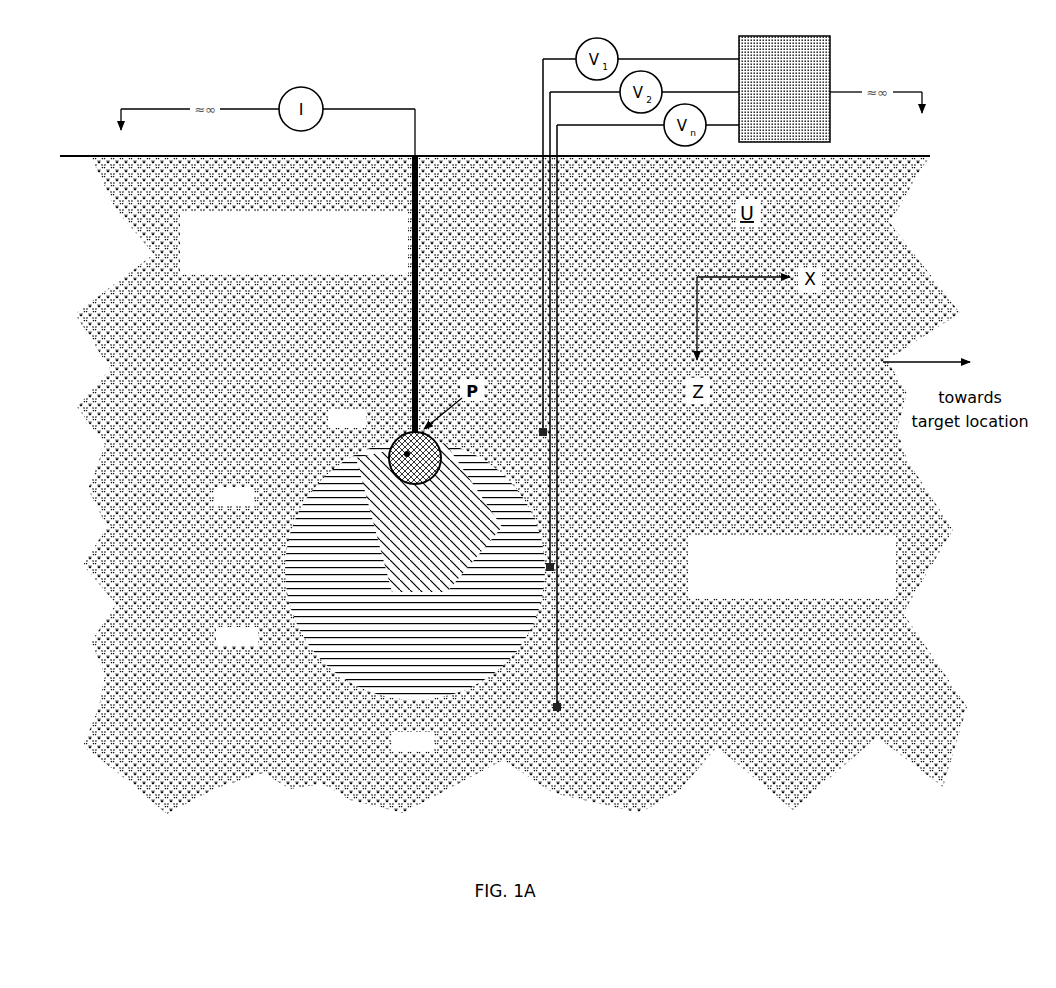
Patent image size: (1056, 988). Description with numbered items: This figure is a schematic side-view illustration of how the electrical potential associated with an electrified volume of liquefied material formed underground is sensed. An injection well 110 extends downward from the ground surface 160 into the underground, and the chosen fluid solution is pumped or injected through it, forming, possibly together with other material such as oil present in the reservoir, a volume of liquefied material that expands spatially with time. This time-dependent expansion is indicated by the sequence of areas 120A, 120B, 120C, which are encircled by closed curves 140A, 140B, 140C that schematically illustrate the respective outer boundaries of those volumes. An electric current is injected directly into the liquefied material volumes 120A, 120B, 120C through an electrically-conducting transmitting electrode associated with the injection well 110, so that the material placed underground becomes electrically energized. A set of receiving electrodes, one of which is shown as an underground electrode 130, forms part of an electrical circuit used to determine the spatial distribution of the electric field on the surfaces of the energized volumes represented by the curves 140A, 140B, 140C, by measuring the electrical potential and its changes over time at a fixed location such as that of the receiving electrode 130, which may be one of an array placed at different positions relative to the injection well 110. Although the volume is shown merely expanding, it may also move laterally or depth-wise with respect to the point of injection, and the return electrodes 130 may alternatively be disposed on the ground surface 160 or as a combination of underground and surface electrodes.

The injection well 110 is at (404, 342).
The liquefied material volume 120A is at (396, 446).
The liquefied material volume 120B is at (358, 505).
The liquefied material volume 120C is at (314, 619).
The receiving electrode 130 is at (571, 697).
The closed curve 140A is at (430, 494).
The closed curve 140B is at (444, 596).
The closed curve 140C is at (456, 703).
The ground surface 160 is at (503, 151).